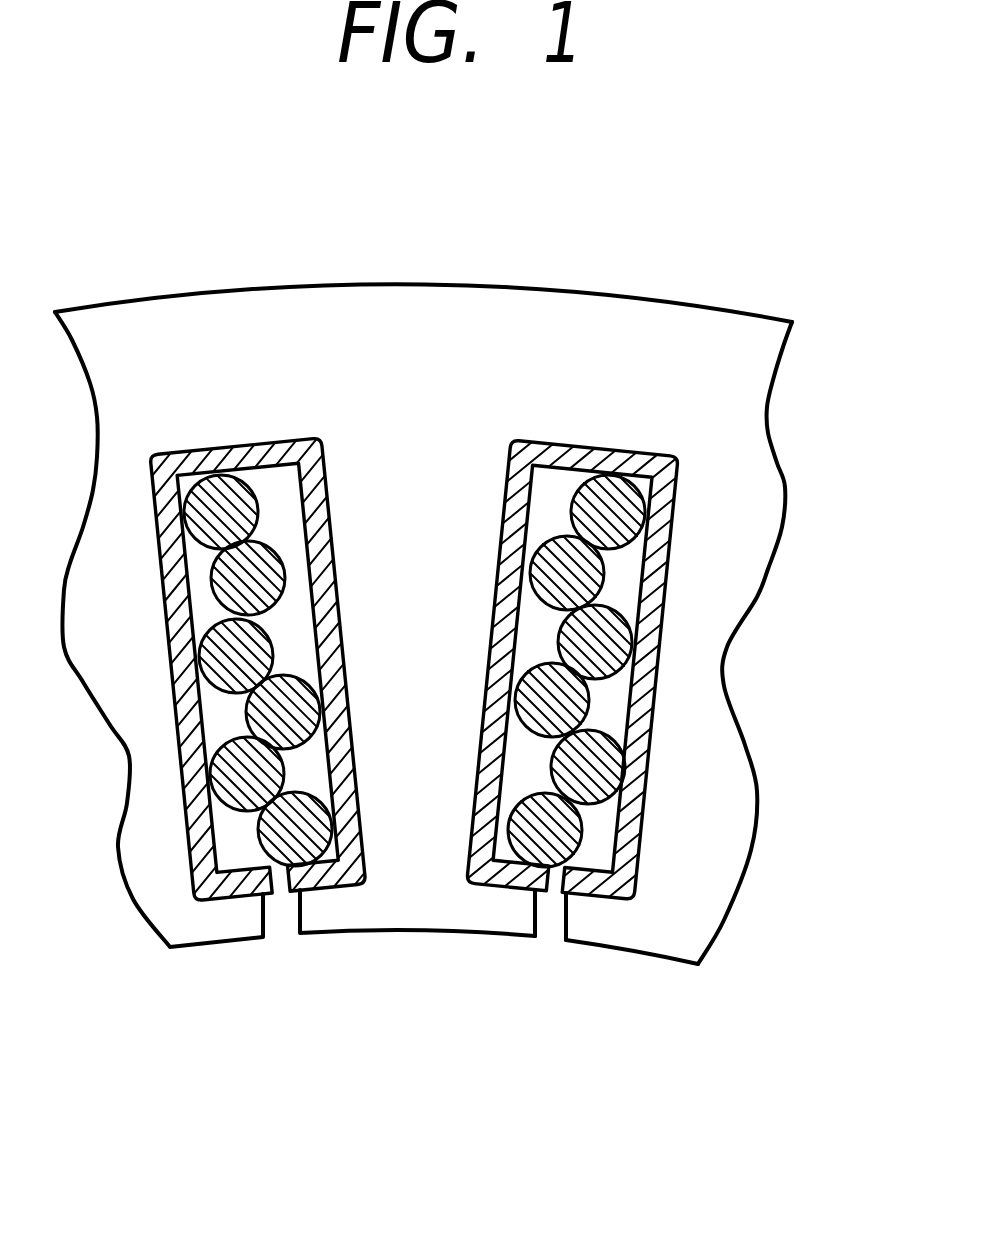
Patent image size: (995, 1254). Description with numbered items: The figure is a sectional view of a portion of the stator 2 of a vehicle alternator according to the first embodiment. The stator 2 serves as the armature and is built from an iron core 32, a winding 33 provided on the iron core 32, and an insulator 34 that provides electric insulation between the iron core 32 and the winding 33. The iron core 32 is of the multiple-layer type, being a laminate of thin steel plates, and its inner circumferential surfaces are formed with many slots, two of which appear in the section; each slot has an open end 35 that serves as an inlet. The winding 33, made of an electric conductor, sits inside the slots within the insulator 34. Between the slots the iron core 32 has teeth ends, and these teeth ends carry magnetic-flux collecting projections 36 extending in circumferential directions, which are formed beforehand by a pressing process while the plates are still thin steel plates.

The stator 2 is at (478, 262).
The iron core 32 is at (693, 320).
The winding 33 is at (675, 474).
The insulator 34 is at (650, 725).
The open end 35 is at (550, 930).
The magnetic-flux collecting projection 36 is at (472, 915).